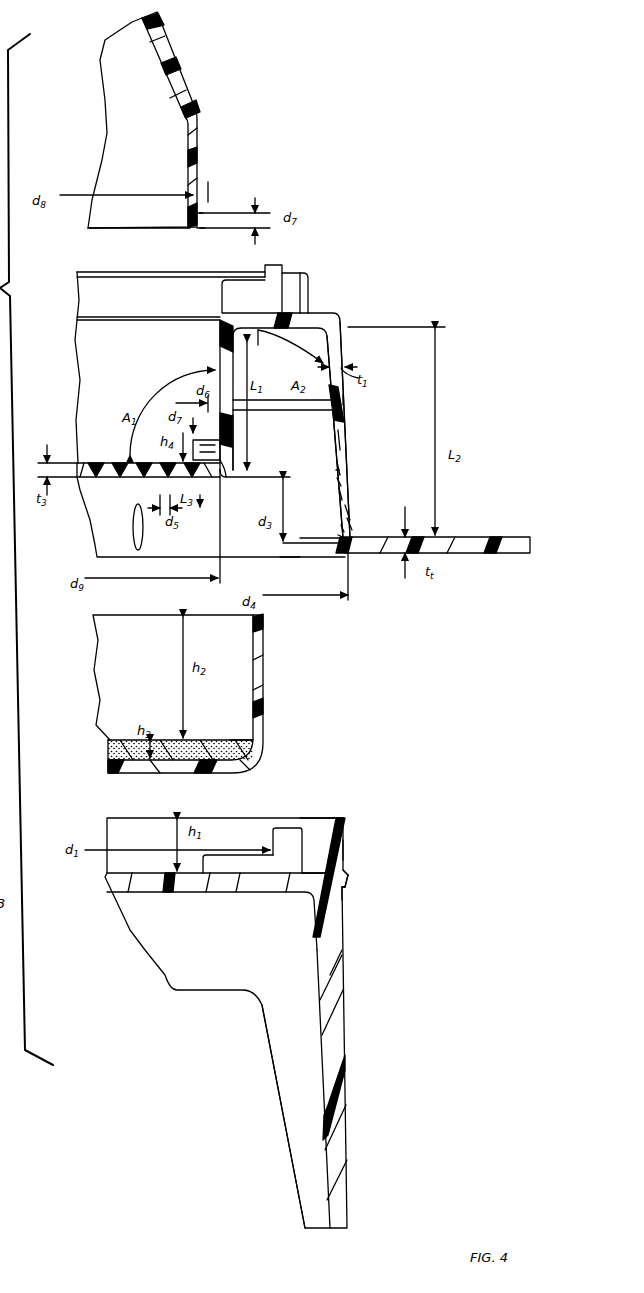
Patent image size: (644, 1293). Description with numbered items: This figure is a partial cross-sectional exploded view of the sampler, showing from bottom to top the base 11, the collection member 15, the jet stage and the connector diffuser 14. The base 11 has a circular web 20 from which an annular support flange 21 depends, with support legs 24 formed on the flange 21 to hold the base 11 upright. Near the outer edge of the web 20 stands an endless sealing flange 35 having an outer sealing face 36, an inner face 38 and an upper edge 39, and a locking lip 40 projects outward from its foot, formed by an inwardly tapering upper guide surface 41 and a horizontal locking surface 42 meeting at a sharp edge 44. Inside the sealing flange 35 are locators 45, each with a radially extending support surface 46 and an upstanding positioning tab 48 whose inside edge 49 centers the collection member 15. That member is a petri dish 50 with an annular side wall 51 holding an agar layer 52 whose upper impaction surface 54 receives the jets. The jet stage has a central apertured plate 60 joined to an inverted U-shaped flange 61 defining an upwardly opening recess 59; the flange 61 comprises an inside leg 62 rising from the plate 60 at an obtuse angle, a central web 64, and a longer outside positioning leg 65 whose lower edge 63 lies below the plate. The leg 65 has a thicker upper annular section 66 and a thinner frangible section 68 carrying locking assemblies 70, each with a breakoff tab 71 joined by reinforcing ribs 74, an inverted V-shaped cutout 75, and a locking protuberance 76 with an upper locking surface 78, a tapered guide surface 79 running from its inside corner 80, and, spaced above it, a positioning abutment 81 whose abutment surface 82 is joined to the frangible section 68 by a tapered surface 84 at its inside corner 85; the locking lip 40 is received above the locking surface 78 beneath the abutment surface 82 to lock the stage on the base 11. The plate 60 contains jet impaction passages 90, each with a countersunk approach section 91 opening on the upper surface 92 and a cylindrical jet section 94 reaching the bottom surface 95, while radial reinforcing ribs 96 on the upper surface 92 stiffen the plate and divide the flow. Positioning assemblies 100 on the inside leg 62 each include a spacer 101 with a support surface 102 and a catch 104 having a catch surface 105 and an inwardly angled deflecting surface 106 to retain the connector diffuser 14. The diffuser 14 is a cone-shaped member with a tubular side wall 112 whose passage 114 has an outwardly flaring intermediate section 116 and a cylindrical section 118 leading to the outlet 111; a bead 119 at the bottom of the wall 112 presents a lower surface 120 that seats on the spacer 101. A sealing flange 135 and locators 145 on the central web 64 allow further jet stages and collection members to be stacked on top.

The base 11 is at (341, 1054).
The connector diffuser 14 is at (200, 92).
The collection member 15 is at (266, 690).
The circular web 20 is at (230, 893).
The annular support flange 21 is at (340, 975).
The support legs 24 is at (303, 1178).
The sealing flange 35 is at (345, 825).
The outer sealing face 36 is at (347, 848).
The inner face 38 is at (335, 848).
The upper edge 39 is at (308, 818).
The locking lip 40 is at (347, 878).
The upper guide surface 41 is at (348, 872).
The lower locking surface 42 is at (347, 898).
The sharp edge 44 is at (347, 885).
The locators 45 is at (247, 893).
The support surface 46 is at (238, 852).
The positioning tab 48 is at (285, 828).
The inside edge 49 is at (268, 850).
The petri dish 50 is at (262, 760).
The side wall 51 is at (262, 660).
The agar layer 52 is at (166, 740).
The impaction surface 54 is at (232, 740).
The recess 59 is at (100, 373).
The central circular apertured plate 60 is at (196, 478).
The inverted U-shaped flange 61 is at (338, 318).
The inside leg 62 is at (220, 357).
The lower edge 63 is at (295, 557).
The central web 64 is at (258, 332).
The outside positioning leg 65 is at (343, 399).
The upper annular section 66 is at (337, 356).
The frangible section 68 is at (343, 440).
The locking assemblies 70 is at (510, 518).
The breakoff tab 71 is at (472, 553).
The reinforcing ribs 74 is at (353, 525).
The inverted V-shaped cutout 75 is at (349, 512).
The locking protuberance 76 is at (340, 545).
The locking surface 78 is at (343, 530).
The guide surface 79 is at (345, 555).
The inside corner 80 is at (341, 535).
The positioning abutment 81 is at (338, 470).
The abutment surface 82 is at (340, 490).
The tapered surface 84 is at (339, 470).
The inside corner 85 is at (337, 480).
The jet impaction passages 90 is at (120, 478).
The countersunk approach section 91 is at (100, 463).
The upper surface 92 is at (120, 463).
The jet section 94 is at (98, 478).
The bottom surface 95 is at (144, 478).
The reinforcing ribs 96 is at (152, 463).
The positioning assemblies 100 is at (210, 440).
The spacer 101 is at (226, 480).
The support surface 102 is at (228, 474).
The catch 104 is at (235, 428).
The catch surface 105 is at (236, 440).
The deflecting surface 106 is at (235, 412).
The outlet 111 is at (130, 228).
The tubular side wall 112 is at (178, 60).
The passage 114 is at (175, 143).
The intermediate section 116 is at (163, 30).
The cylindrical section 118 is at (175, 170).
The bead 119 is at (202, 216).
The lower surface 120 is at (200, 228).
The sealing flange 135 is at (312, 297).
The locators 145 is at (281, 275).